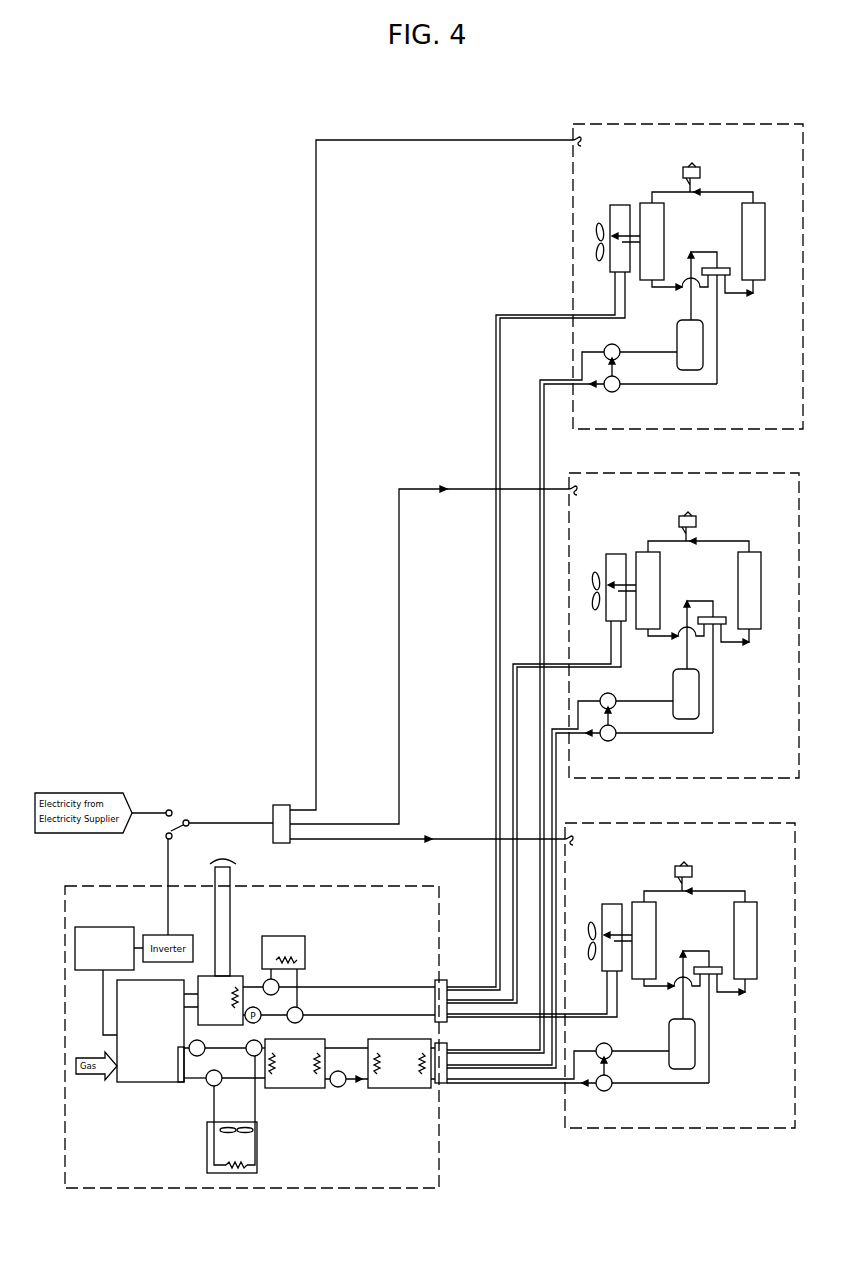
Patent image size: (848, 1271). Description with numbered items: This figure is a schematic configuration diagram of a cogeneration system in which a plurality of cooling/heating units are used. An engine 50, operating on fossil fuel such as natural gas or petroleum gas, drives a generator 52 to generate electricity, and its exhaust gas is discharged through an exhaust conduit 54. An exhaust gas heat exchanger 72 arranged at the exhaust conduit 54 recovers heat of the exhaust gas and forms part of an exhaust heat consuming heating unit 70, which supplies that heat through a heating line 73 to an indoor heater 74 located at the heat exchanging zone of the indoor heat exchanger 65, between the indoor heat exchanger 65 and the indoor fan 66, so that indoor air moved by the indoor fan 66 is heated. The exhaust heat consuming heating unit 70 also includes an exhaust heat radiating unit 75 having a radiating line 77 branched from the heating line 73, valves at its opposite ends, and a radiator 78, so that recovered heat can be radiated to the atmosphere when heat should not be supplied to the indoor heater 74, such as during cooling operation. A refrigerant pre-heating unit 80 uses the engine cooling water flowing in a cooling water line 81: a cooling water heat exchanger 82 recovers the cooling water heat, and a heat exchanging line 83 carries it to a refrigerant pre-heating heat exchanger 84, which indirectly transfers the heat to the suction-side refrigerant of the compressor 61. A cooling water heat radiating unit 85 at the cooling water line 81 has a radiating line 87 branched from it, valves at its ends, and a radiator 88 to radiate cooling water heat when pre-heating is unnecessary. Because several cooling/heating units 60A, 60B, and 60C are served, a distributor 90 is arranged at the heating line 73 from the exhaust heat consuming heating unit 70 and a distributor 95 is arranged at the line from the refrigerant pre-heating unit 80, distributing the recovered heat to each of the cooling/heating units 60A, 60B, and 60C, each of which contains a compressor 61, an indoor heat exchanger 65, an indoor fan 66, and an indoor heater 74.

The engine 50 is at (140, 1085).
The generator 52 is at (112, 936).
The exhaust conduit 54 is at (222, 914).
The cooling/heating unit 60A is at (680, 991).
The cooling/heating unit 60B is at (684, 641).
The cooling/heating unit 60C is at (715, 413).
The compressor 61 is at (707, 1050).
The indoor heat exchanger 65 is at (640, 919).
The indoor fan 66 is at (588, 923).
The exhaust heat consuming heating unit 70 is at (359, 950).
The exhaust gas heat exchanger 72 is at (234, 975).
The heating line 73 is at (376, 986).
The indoor heater 74 is at (612, 920).
The exhaust heat radiating unit 75 is at (306, 945).
The radiating line 77 is at (300, 980).
The radiator 78 is at (277, 936).
The refrigerant pre-heating unit 80 is at (302, 1096).
The cooling water line 81 is at (188, 1086).
The cooling water heat exchanger 82 is at (306, 1089).
The heat exchanging line 83 is at (338, 1090).
The refrigerant pre-heating heat exchanger 84 is at (400, 1090).
The cooling water heat radiating unit 85 is at (200, 1149).
The radiating line 87 is at (256, 1104).
The radiator 88 is at (270, 1155).
The distributor 90 is at (441, 980).
The distributor 95 is at (446, 1085).